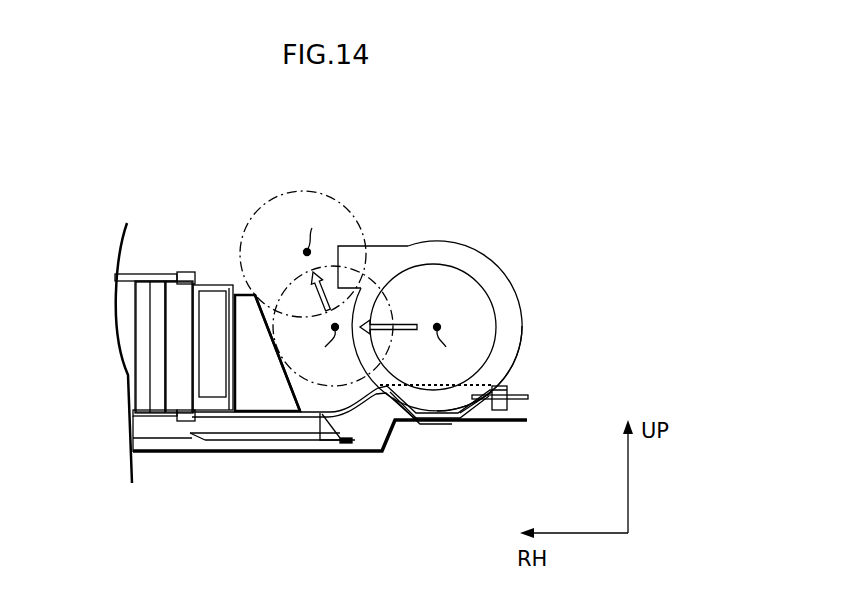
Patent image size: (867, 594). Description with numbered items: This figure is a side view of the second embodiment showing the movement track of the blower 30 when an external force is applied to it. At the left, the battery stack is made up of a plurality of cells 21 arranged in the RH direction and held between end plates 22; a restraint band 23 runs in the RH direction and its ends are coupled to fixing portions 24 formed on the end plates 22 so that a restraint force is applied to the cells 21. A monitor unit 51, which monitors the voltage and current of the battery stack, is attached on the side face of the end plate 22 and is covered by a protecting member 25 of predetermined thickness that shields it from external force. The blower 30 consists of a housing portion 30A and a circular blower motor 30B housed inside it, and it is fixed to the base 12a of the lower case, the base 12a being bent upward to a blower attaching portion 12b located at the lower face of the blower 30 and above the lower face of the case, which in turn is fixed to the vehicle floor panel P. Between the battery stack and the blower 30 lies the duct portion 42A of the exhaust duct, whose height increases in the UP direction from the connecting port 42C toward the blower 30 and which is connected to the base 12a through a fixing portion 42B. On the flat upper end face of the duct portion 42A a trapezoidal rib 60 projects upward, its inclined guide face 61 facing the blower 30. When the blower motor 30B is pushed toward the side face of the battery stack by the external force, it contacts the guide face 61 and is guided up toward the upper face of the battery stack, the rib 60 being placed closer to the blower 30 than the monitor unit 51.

The base 12a is at (352, 444).
The blower attaching portion 12b is at (520, 393).
The cell 21 is at (158, 403).
The end plate 22 is at (174, 294).
The restraint band 23 is at (116, 275).
The fixing portion 24 is at (180, 272).
The protecting member 25 is at (202, 281).
The blower 30 is at (479, 251).
The housing portion 30A is at (523, 347).
The blower motor 30B is at (312, 192).
The duct portion 42A is at (292, 423).
The fixing portion 42B is at (348, 440).
The connecting port 42C is at (210, 427).
The monitor unit 51 is at (208, 350).
The rib 60 is at (239, 290).
The guide face 61 is at (293, 392).
The floor panel P is at (500, 423).